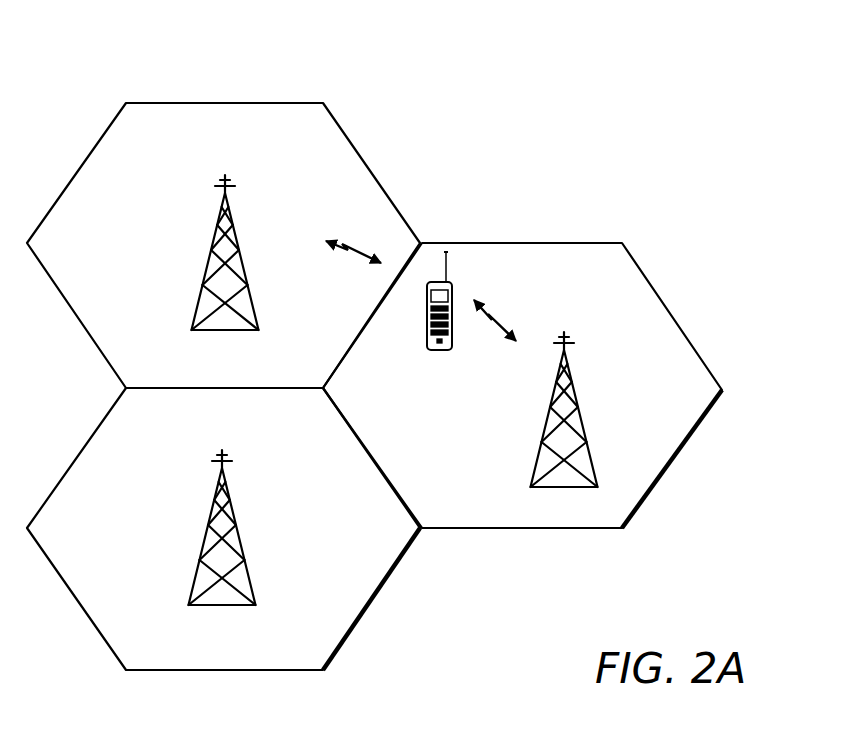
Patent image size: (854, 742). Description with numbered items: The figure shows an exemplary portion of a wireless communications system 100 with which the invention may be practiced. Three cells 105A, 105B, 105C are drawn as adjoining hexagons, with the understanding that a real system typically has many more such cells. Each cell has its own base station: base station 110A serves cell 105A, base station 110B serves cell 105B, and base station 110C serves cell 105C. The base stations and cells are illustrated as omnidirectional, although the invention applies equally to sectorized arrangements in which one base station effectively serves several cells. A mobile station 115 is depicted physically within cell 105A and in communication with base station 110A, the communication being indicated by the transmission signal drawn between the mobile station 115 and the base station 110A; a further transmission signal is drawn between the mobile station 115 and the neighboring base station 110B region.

The wireless communications system 100 is at (738, 51).
The cell 105A is at (622, 243).
The cell 105B is at (323, 103).
The cell 105C is at (323, 670).
The base station 110A is at (535, 453).
The base station 110B is at (202, 260).
The base station 110C is at (200, 538).
The mobile station 115 is at (452, 295).